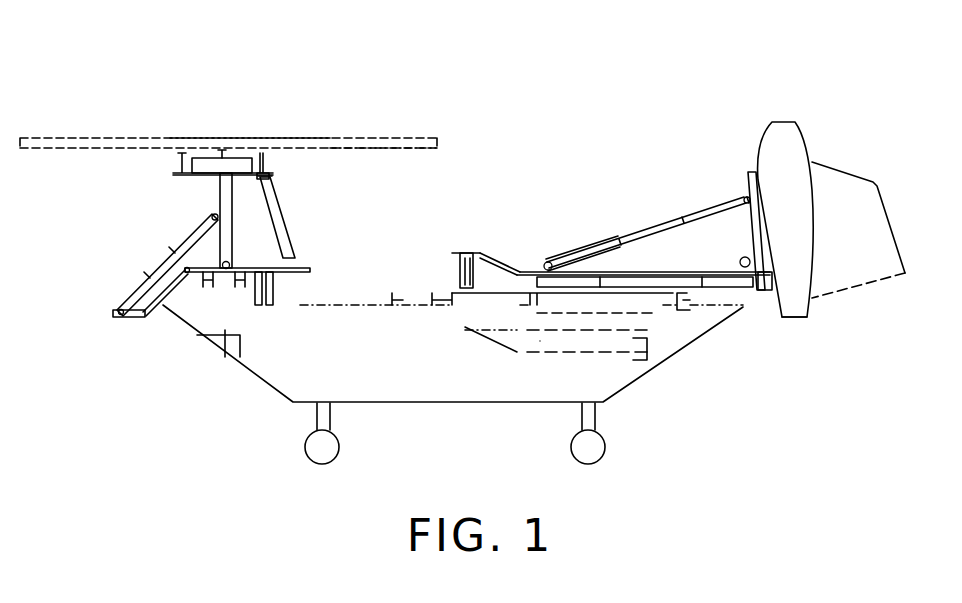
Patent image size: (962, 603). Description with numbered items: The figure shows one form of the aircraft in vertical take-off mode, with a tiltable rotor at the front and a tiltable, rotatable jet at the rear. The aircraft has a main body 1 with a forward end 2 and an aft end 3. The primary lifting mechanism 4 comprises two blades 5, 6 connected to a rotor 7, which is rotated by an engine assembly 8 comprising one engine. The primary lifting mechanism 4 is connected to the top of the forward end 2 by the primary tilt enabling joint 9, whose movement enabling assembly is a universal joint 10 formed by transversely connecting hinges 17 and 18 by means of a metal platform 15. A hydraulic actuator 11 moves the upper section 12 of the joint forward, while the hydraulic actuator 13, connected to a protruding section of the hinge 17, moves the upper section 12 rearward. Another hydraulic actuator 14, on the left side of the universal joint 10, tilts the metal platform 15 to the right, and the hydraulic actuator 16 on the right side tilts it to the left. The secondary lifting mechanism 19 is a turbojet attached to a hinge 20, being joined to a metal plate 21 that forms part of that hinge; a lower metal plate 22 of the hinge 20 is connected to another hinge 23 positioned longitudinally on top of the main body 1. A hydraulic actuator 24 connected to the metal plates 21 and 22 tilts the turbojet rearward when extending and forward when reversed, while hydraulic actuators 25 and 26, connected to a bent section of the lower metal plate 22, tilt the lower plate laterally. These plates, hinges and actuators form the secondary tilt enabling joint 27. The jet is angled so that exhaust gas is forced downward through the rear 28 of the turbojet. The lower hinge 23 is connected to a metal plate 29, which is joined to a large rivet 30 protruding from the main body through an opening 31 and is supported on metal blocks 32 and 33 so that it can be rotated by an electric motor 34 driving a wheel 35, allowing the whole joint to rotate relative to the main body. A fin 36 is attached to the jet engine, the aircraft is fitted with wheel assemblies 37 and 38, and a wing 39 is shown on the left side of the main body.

The main body 1 is at (600, 407).
The forward end 2 is at (136, 250).
The aft end 3 is at (650, 313).
The primary lifting mechanism 4 is at (248, 125).
The blade 5 is at (382, 138).
The blade 6 is at (50, 138).
The rotor 7 is at (222, 157).
The engine assembly 8 is at (205, 162).
The primary tilt enabling joint 9 is at (283, 180).
The universal joint 10 is at (228, 290).
The hydraulic actuator 11 is at (282, 205).
The upper section 12 is at (263, 173).
The hydraulic actuator 13 is at (197, 233).
The hydraulic actuator 14 is at (257, 283).
The metal platform 15 is at (308, 273).
The hydraulic actuator 16 is at (268, 280).
The hinge 17 is at (210, 260).
The hinge 18 is at (200, 272).
The secondary lifting mechanism 19 is at (780, 143).
The hinge 20 is at (757, 288).
The metal plate 21 is at (747, 175).
The lower metal plate 22 is at (540, 275).
The hinge 23 is at (608, 283).
The hydraulic actuator 24 is at (627, 237).
The hydraulic actuator 25 is at (452, 253).
The hydraulic actuator 26 is at (467, 277).
The secondary tilt enabling joint 27 is at (682, 197).
The rear 28 is at (795, 318).
The metal plate 29 is at (493, 292).
The large rivet 30 is at (655, 313).
The opening 31 is at (617, 307).
The metal block 32 is at (530, 295).
The metal block 33 is at (687, 313).
The electric motor 34 is at (392, 297).
The wheel 35 is at (445, 293).
The fin 36 is at (850, 270).
The wheel assembly 37 is at (323, 452).
The wheel assembly 38 is at (587, 452).
The wing 39 is at (558, 342).